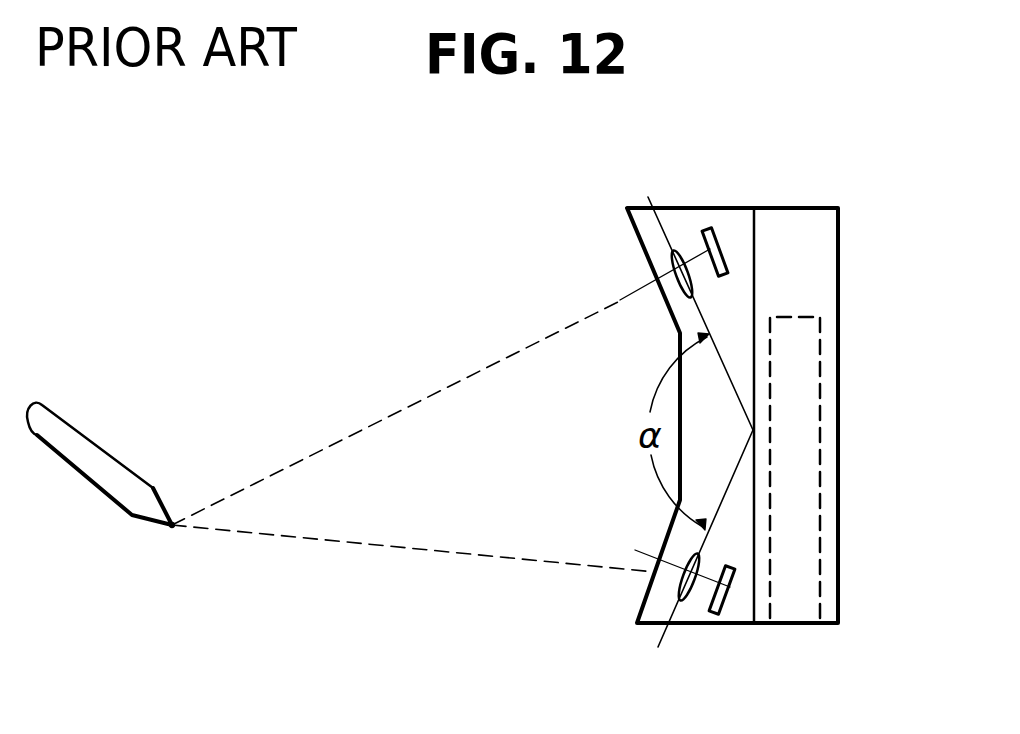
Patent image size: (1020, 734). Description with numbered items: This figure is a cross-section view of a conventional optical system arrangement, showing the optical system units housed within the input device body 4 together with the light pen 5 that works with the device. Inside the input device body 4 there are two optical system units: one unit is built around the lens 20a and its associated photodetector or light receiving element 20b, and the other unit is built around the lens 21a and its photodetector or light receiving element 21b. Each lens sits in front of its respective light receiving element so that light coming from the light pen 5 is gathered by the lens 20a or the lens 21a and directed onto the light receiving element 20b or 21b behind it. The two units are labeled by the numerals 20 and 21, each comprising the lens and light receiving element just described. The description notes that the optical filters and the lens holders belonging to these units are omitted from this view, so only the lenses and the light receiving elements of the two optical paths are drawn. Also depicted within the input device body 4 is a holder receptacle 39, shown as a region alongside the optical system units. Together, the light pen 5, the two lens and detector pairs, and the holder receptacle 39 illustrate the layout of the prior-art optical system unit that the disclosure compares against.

The input device body 4 is at (700, 178).
The light pen 5 is at (130, 471).
The first mirror 20 is at (640, 202).
The lens 20a is at (670, 268).
The light receiving element 20b is at (717, 233).
The second mirror 21 is at (650, 636).
The lens 21a is at (675, 593).
The light receiving element 21b is at (723, 610).
The holder receptacle 39 is at (820, 467).